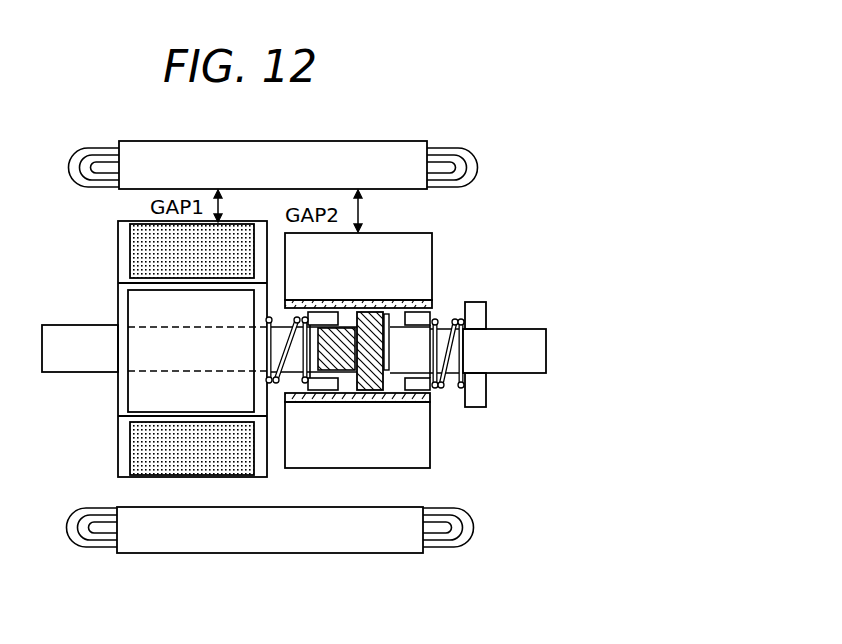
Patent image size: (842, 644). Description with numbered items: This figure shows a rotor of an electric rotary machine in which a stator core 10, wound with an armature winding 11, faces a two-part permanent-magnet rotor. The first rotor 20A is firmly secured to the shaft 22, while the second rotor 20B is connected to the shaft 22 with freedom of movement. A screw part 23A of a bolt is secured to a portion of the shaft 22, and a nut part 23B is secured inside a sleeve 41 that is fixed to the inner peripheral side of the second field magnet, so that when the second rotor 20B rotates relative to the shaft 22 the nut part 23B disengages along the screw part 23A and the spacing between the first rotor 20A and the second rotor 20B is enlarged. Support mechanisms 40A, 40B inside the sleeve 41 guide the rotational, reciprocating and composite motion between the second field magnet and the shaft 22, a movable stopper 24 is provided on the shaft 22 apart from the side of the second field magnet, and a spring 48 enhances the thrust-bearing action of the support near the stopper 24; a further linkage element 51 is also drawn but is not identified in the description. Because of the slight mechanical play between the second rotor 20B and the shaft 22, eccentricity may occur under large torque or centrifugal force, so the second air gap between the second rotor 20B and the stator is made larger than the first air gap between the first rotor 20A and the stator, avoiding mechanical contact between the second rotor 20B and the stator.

The stator core 10 is at (167, 160).
The armature winding 11 is at (84, 150).
The first rotor 20A is at (118, 240).
The second rotor 20B is at (433, 234).
The shaft 22 is at (62, 375).
The screw part of a bolt 23A is at (388, 312).
The nut part 23B is at (372, 300).
The movable stopper 24 is at (490, 318).
The support mechanism 40A is at (318, 390).
The support mechanism 40B is at (407, 390).
The sleeve 41 is at (432, 406).
The spring 48 is at (270, 384).
The link mechanism 51 is at (440, 316).